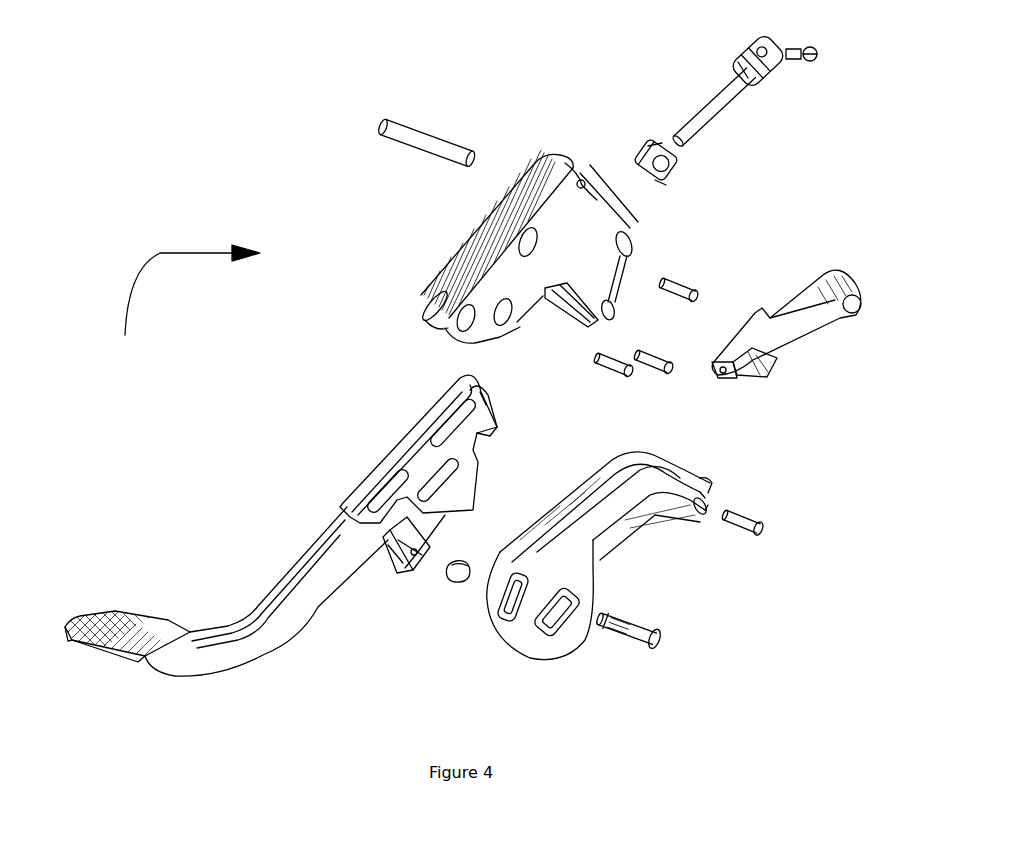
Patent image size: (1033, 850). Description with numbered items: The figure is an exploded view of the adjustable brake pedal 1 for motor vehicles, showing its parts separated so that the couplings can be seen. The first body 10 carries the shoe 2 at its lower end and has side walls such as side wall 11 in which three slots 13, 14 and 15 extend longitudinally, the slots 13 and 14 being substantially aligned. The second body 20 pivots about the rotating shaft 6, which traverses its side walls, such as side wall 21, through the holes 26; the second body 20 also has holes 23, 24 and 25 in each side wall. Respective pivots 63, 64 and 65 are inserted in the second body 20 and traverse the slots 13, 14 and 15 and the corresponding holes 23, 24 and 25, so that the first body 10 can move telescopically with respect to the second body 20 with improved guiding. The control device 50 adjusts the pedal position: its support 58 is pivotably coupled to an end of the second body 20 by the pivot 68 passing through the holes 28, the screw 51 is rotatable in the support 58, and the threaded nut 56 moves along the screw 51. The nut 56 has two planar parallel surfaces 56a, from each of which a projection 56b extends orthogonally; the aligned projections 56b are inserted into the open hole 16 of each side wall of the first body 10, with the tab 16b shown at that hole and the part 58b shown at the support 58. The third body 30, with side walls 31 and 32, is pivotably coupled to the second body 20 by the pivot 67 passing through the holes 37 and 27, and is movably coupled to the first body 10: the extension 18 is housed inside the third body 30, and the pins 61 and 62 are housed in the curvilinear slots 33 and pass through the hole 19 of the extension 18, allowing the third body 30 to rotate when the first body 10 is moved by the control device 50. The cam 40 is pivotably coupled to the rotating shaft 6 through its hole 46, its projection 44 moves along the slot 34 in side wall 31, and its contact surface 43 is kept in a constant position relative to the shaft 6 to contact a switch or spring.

The adjustable brake pedal 1 is at (171, 301).
The shoe 2 is at (120, 614).
The rotating shaft 6 is at (378, 127).
The first body 10 is at (277, 580).
The side wall 11 is at (283, 617).
The slot 13 is at (367, 477).
The slot 14 is at (447, 388).
The slot 15 is at (440, 473).
The hole 16 is at (486, 403).
The hook tab 16b is at (498, 432).
The extension 18 is at (403, 527).
The hole 19 is at (393, 555).
The second body 20 is at (482, 240).
The side wall 21 is at (423, 313).
The hole 23 is at (425, 300).
The hole 24 is at (538, 236).
The hole 25 is at (508, 322).
The hole 26 is at (634, 245).
The hole 27 is at (615, 314).
The hole 28 is at (580, 181).
The third body 30 is at (697, 517).
The side wall 31 is at (668, 512).
The side wall 32 is at (540, 527).
The slot 33 is at (517, 600).
The slot 34 is at (648, 522).
The hole 37 is at (712, 480).
The cam 40 is at (797, 323).
The contact surface 43 is at (777, 374).
The projection 44 is at (716, 383).
The hole 46 is at (851, 293).
The control device 50 is at (745, 103).
The screw 51 is at (720, 123).
The threaded nut 56 is at (633, 165).
The surface 56a is at (665, 186).
The projection 56b is at (640, 150).
The support 58 is at (764, 84).
The clevis side 58b is at (783, 75).
The pin 61 is at (447, 578).
The pin 62 is at (668, 640).
The pivot 63 is at (598, 372).
The pivot 64 is at (693, 283).
The pivot 65 is at (652, 372).
The pivot 67 is at (750, 517).
The pivot 68 is at (818, 55).